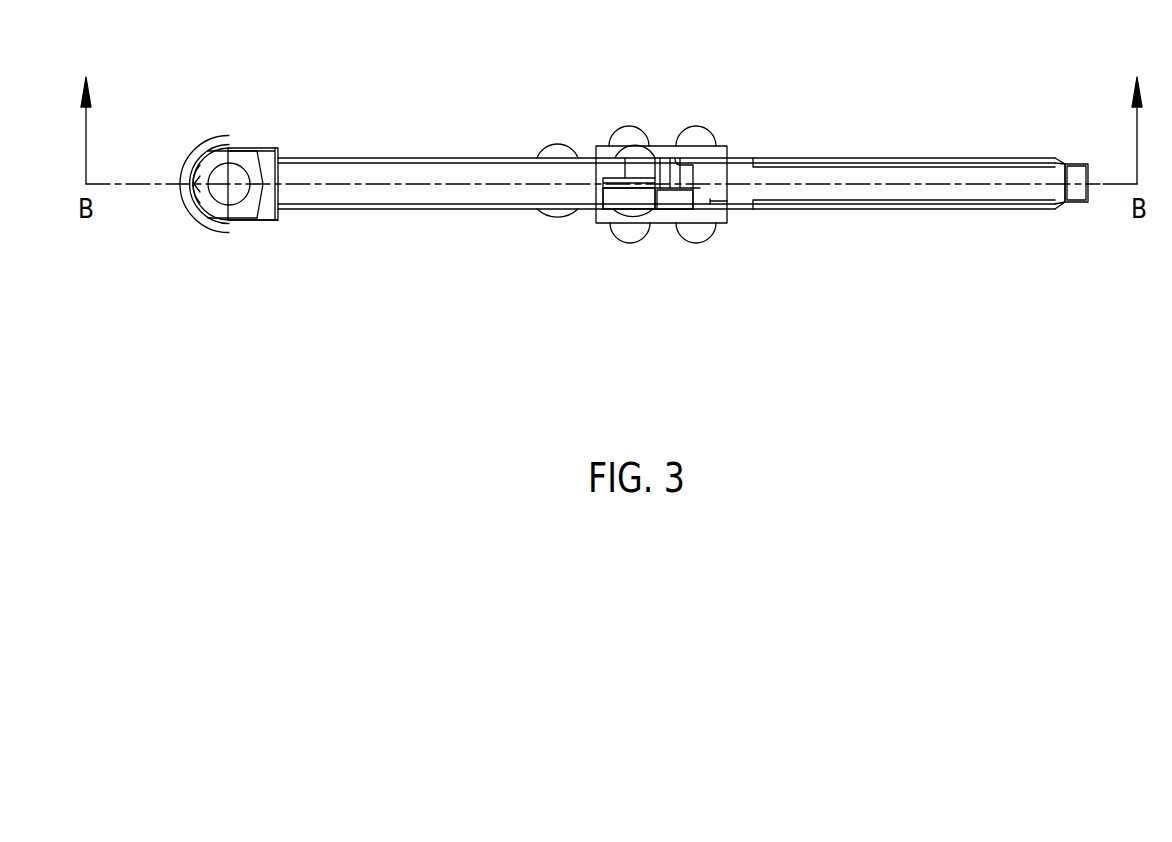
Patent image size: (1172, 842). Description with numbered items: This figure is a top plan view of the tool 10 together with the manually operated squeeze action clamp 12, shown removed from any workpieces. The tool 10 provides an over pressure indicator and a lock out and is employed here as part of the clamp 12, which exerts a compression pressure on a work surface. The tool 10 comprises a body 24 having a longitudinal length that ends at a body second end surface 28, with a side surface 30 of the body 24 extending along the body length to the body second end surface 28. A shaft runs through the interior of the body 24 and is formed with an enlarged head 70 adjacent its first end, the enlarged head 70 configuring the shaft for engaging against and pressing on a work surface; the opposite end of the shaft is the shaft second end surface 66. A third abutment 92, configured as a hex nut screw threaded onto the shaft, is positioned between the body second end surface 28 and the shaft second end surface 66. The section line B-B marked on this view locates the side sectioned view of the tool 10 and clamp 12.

The tool 10 is at (293, 134).
The manually operated squeeze action clamp 12 is at (472, 147).
The body 24 is at (265, 146).
The body second end surface 28 is at (265, 205).
The side surface 30 is at (265, 222).
The shaft second end surface 66 is at (232, 173).
The enlarged head 70 is at (230, 230).
The third abutment 92 is at (212, 205).